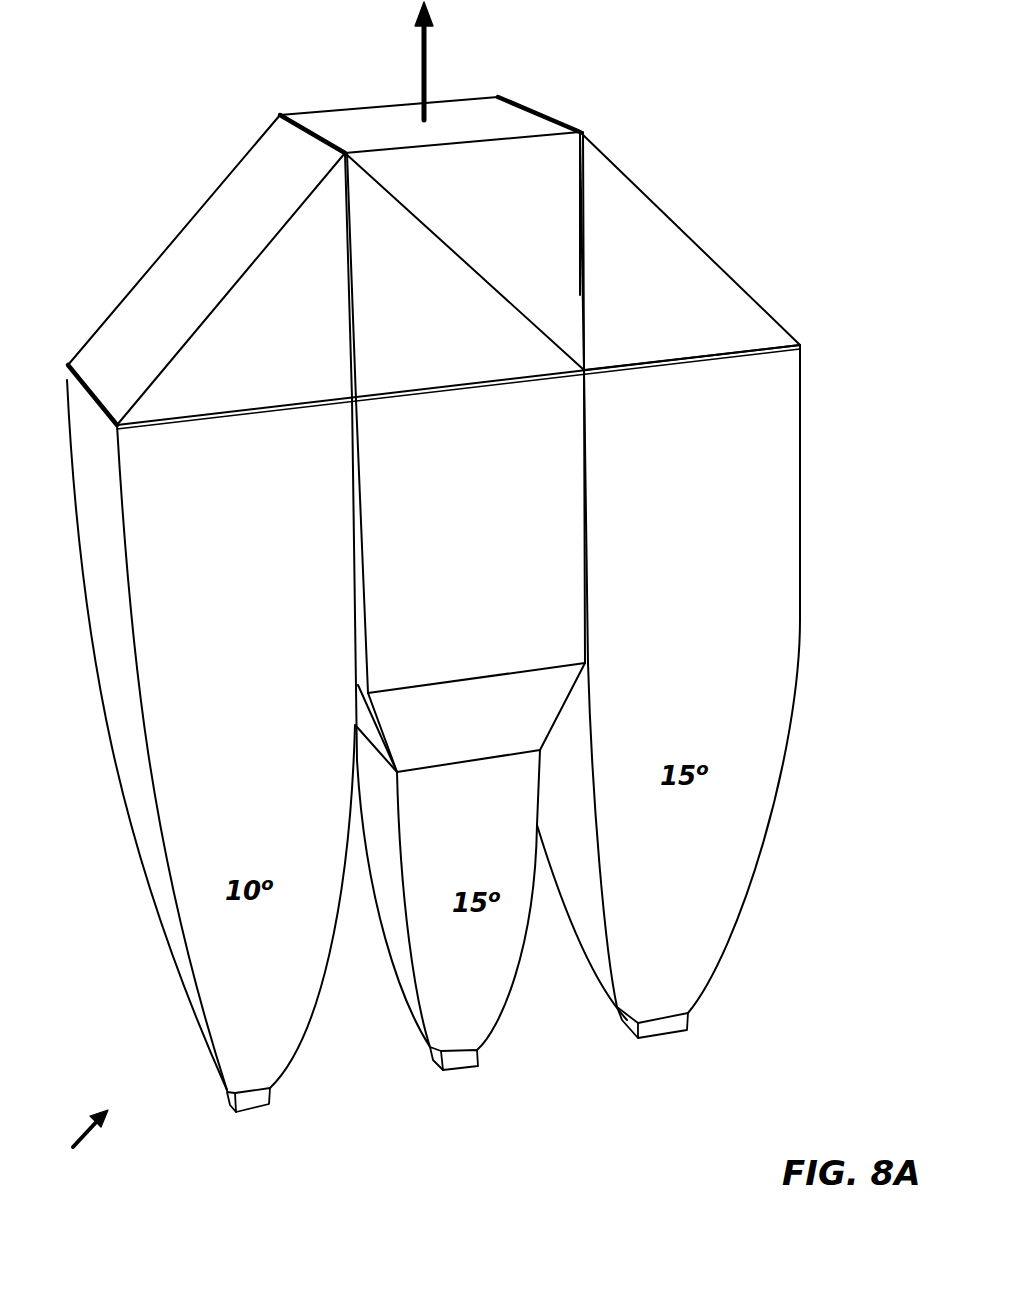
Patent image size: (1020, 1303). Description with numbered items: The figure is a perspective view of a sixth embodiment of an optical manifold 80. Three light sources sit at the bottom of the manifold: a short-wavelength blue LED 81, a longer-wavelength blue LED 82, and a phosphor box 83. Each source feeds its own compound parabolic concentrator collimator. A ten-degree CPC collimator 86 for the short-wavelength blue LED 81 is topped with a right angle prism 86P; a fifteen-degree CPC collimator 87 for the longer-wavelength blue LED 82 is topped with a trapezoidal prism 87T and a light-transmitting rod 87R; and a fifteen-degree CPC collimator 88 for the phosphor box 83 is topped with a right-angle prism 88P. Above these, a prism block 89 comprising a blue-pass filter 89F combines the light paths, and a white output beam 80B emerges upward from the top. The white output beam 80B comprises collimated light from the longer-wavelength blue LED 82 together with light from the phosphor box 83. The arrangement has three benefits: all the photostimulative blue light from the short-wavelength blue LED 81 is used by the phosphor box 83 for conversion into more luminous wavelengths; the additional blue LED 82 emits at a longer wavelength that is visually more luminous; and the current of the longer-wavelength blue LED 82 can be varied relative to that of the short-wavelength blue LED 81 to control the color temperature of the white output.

The optical manifold 80 is at (76, 1144).
The white output beam 80B is at (417, 52).
The short-wavelength blue LED 81 is at (252, 1100).
The longer-wavelength blue LED 82 is at (460, 1067).
The phosphor box 83 is at (677, 1035).
The 10° CPC collimator 86 is at (132, 808).
The right angle prism 86P is at (187, 268).
The 15° CPC collimator 87 is at (395, 938).
The light-transmitting rod 87R is at (402, 612).
The trapezoidal prism 87T is at (395, 722).
The 15° CPC collimator 88 is at (765, 780).
The right-angle prism 88P is at (668, 252).
The prism block 89 is at (470, 112).
The blue-pass filter 89F is at (455, 242).